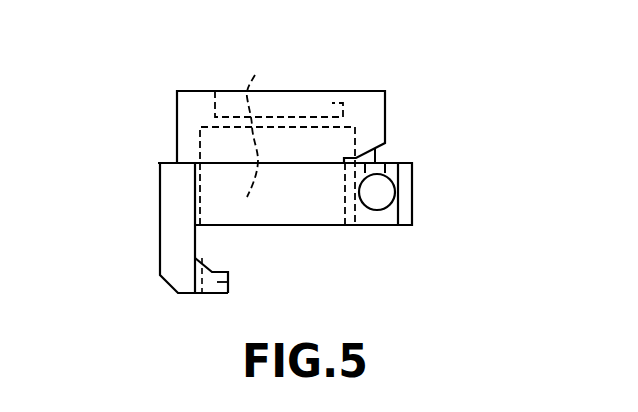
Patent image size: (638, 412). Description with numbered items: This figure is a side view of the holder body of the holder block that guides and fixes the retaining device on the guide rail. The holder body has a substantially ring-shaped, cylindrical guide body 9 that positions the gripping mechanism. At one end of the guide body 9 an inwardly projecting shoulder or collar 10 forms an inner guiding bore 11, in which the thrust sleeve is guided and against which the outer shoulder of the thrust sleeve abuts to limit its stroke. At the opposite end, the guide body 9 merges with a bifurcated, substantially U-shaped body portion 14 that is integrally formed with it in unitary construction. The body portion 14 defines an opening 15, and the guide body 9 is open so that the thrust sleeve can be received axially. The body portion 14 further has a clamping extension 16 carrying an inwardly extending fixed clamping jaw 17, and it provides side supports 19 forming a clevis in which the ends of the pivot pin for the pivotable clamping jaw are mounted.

The guide body 9 is at (185, 128).
The inwardly projecting shoulder or collar 10 is at (200, 100).
The inner guiding bore 11 is at (332, 103).
The bifurcated body portion 14 is at (170, 180).
The opening 15 is at (258, 121).
The clamping extension 16 is at (159, 235).
The fixed clamping jaw 17 is at (230, 282).
The side supports 19 is at (413, 172).